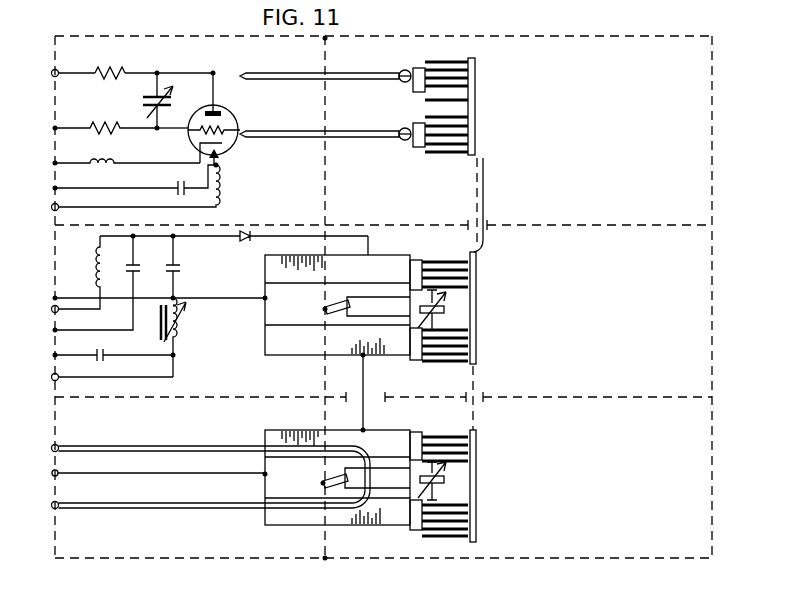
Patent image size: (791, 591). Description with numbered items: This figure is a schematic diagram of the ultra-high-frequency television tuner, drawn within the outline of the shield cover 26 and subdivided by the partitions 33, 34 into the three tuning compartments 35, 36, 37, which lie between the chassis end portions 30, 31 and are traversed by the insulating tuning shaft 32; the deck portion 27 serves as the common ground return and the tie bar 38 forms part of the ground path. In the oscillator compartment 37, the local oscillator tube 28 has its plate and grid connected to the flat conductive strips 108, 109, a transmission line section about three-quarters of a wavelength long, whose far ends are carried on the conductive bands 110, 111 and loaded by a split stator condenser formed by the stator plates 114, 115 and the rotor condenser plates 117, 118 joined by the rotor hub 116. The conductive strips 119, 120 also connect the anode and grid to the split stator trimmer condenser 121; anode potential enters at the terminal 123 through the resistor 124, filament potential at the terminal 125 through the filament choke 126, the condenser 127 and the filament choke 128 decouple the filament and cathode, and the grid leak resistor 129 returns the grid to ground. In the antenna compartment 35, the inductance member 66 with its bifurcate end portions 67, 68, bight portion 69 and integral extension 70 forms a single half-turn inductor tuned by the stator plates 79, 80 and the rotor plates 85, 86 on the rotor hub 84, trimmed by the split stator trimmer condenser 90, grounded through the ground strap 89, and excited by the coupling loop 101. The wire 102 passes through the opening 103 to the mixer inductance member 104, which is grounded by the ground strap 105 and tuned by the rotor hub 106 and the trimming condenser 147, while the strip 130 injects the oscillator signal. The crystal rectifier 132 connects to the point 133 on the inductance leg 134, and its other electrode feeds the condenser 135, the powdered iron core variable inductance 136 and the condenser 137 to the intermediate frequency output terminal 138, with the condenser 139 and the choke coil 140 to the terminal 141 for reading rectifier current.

The shield cover 26 is at (714, 313).
The deck portion 27 is at (53, 272).
The local oscillator tube 28 is at (238, 114).
The end portion 30 is at (272, 562).
The end portion 31 is at (418, 38).
The tuning shaft 32 is at (478, 395).
The partition 33 is at (558, 398).
The partition 34 is at (558, 226).
The tuning compartment 35 is at (631, 496).
The tuning compartment 36 is at (631, 321).
The tuning compartment 37 is at (631, 141).
The tie bar 38 is at (328, 394).
The inductance member 66 is at (355, 527).
The bifurcate end portion 67 is at (398, 515).
The bifurcate end portion 68 is at (385, 445).
The bight portion 69 is at (331, 468).
The integral extension 70 is at (272, 490).
The stator plates 79 is at (430, 502).
The stator plates 80 is at (425, 432).
The rotor hub 84 is at (478, 484).
The rotor plates 85 is at (456, 527).
The rotor plates 86 is at (445, 446).
The ground strap 89 is at (320, 479).
The split stator trimmer condenser 90 is at (440, 473).
The coupling loop 101 is at (180, 509).
The wire 102 is at (366, 377).
The opening 103 is at (370, 405).
The inductance member 104 is at (329, 364).
The ground strap 105 is at (322, 306).
The rotor hub 106 is at (478, 313).
The conductive strip 108 is at (297, 83).
The conductive strip 109 is at (297, 141).
The conductive band 110 is at (400, 82).
The conductive band 111 is at (400, 140).
The stator plates 114 is at (418, 68).
The stator plates 115 is at (418, 147).
The rotor hub 116 is at (476, 102).
The rotor condenser plates 117 is at (478, 86).
The rotor condenser plates 118 is at (478, 142).
The conductive strip 119 is at (183, 72).
The conductive strip 120 is at (181, 129).
The split stator trimmer condenser 121 is at (176, 96).
The terminal 123 is at (52, 75).
The resistor 124 is at (108, 70).
The terminal 125 is at (52, 204).
The filament choke 126 is at (228, 188).
The condenser 127 is at (178, 190).
The filament choke 128 is at (120, 167).
The grid leak resistor 129 is at (118, 131).
The strip 130 is at (486, 178).
The crystal rectifier 132 is at (244, 242).
The point 133 is at (372, 255).
The inductance leg 134 is at (389, 275).
The condenser 135 is at (180, 262).
The powdered iron core variable inductance 136 is at (186, 326).
The condenser 137 is at (107, 355).
The intermediate frequency output terminal 138 is at (51, 380).
The condenser 139 is at (135, 262).
The choke coil 140 is at (98, 258).
The terminal 141 is at (51, 308).
The trimming condenser 147 is at (438, 304).